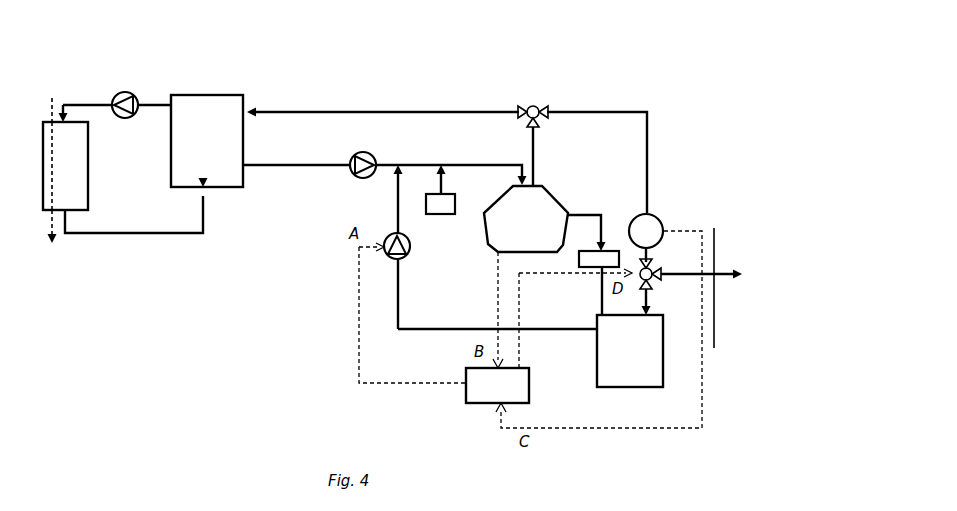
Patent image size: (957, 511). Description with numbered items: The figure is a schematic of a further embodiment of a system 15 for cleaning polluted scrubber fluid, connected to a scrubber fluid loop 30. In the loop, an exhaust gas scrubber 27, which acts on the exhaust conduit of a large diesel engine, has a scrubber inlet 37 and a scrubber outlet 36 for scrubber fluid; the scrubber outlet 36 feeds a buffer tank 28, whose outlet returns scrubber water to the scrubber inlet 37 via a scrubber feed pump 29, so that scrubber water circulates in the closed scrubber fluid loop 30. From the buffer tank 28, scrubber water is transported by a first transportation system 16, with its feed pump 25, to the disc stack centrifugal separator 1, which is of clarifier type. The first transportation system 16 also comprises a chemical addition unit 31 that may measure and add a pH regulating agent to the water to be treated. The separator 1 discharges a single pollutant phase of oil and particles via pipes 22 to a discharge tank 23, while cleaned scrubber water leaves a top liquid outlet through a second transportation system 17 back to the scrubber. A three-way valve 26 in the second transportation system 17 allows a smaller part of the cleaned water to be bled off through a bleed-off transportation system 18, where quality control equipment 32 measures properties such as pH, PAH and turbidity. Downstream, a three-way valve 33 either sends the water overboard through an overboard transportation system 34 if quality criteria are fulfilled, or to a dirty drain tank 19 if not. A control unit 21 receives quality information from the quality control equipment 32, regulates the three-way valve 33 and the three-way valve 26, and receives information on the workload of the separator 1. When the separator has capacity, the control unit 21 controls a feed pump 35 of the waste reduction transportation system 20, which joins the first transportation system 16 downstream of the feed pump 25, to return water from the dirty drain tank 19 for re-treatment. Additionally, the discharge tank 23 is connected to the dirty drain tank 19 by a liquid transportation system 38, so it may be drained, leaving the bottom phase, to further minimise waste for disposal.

The disc stack centrifugal separator 1 is at (488, 241).
The system 15 is at (340, 77).
The first transportation system 16 is at (480, 164).
The second transportation system 17 is at (422, 112).
The bleed-off transportation system 18 is at (648, 160).
The dirty drain tank 19 is at (613, 380).
The waste reduction transportation system 20 is at (454, 328).
The control unit 21 is at (470, 395).
The pipes 22 is at (592, 216).
The discharge tank 23 is at (590, 262).
The feed pump 25 is at (352, 157).
The three-way valve 26 is at (526, 106).
The exhaust gas scrubber 27 is at (90, 176).
The buffer tank 28 is at (216, 98).
The scrubber feed pump 29 is at (118, 93).
The scrubber fluid loop 30 is at (125, 236).
The chemical addition unit 31 is at (450, 214).
The quality control equipment 32 is at (664, 220).
The three-way valve 33 is at (659, 268).
The overboard transportation system 34 is at (722, 280).
The feed pump 35 is at (392, 232).
The scrubber outlet 36 is at (52, 219).
The scrubber inlet 37 is at (52, 114).
The liquid transportation system 38 is at (598, 281).